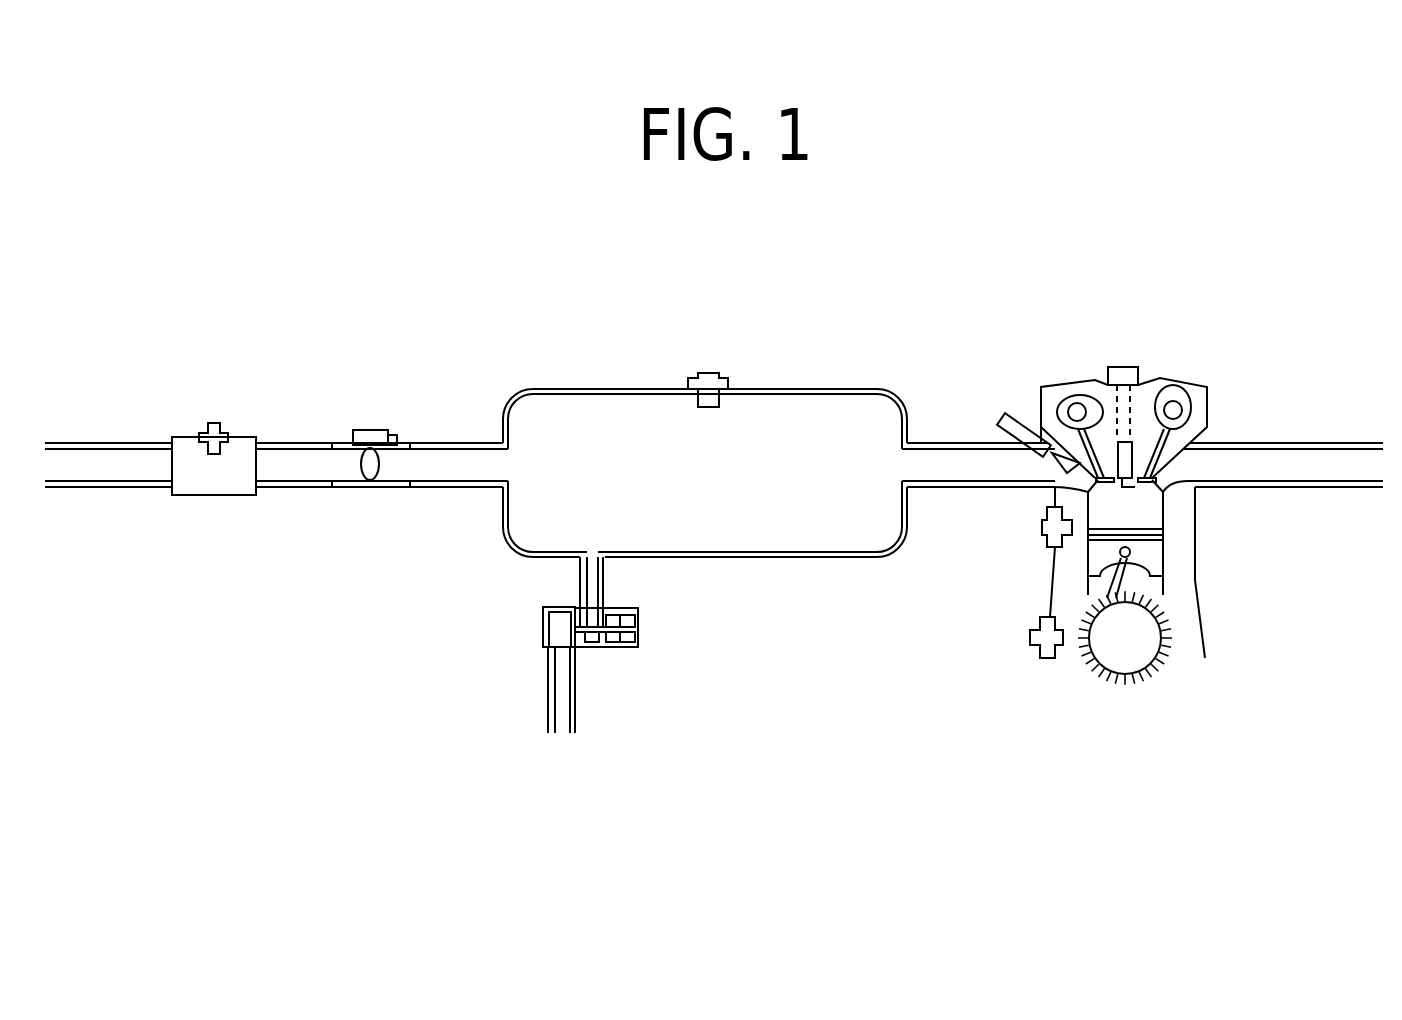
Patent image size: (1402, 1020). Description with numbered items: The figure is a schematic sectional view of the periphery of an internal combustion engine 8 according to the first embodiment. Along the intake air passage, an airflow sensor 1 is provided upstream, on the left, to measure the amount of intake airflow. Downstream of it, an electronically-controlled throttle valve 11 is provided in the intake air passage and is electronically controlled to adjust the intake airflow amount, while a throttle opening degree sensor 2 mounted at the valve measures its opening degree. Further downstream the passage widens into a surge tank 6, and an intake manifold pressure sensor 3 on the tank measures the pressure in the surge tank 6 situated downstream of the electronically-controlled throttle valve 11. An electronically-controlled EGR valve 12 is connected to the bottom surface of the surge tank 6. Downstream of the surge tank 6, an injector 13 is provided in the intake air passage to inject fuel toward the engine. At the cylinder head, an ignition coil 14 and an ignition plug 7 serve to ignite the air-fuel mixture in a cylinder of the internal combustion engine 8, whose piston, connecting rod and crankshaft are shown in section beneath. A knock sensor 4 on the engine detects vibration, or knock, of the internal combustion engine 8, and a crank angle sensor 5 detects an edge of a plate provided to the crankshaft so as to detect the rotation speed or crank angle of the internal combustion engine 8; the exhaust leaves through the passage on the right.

The airflow sensor 1 is at (215, 423).
The throttle opening degree sensor 2 is at (372, 430).
The electronically-controlled throttle valve 11 is at (369, 490).
The intake manifold pressure sensor 3 is at (710, 373).
The surge tank 6 is at (723, 557).
The electronically-controlled EGR valve 12 is at (625, 648).
The injector 13 is at (1002, 422).
The ignition coil 14 is at (1120, 367).
The ignition plug 7 is at (1133, 462).
The knock sensor 4 is at (1040, 522).
The crank angle sensor 5 is at (1030, 640).
The internal combustion engine 8 is at (1197, 575).